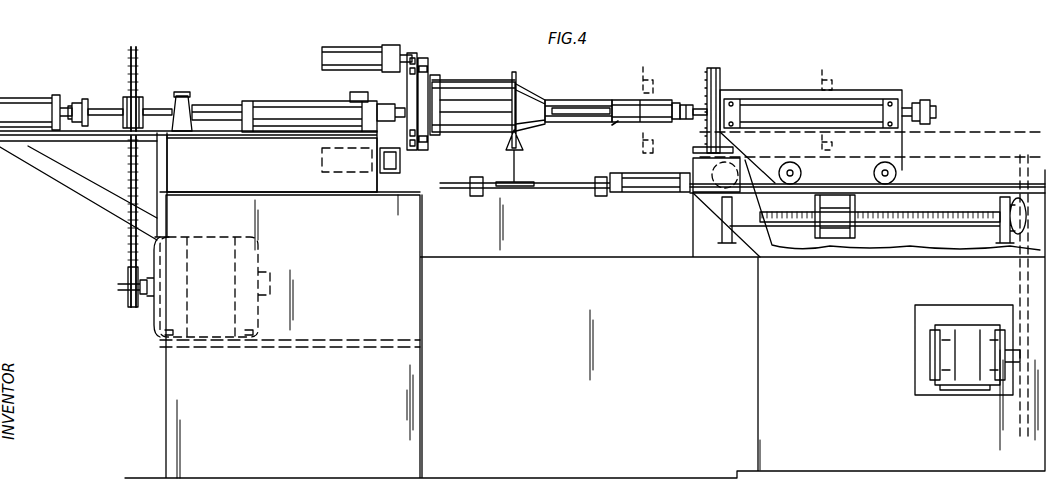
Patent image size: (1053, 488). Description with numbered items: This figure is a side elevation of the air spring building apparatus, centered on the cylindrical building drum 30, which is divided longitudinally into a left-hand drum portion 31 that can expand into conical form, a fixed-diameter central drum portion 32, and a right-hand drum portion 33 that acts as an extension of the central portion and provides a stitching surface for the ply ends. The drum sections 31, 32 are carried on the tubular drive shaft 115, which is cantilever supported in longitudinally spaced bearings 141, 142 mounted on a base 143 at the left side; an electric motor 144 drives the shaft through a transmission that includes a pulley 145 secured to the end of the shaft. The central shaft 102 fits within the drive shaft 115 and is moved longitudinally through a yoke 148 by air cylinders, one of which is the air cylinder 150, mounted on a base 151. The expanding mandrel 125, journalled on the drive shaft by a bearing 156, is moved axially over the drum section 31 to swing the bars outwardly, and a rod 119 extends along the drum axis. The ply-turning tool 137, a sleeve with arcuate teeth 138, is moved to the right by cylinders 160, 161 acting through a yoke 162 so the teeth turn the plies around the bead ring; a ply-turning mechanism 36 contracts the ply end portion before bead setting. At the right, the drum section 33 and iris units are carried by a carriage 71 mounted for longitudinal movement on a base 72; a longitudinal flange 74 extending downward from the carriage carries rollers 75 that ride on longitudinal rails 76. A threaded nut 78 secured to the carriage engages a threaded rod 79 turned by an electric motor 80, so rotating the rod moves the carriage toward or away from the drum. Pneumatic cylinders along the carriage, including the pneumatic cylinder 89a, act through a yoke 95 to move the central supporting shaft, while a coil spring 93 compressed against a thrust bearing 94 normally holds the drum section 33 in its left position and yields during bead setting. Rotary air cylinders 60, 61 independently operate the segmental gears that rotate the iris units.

The cylindrical building drum 30 is at (616, 122).
The left-hand drum portion 31 is at (560, 98).
The central drum portion 32 is at (635, 98).
The right-hand drum portion 33 is at (676, 101).
The ply-turning mechanism 36 is at (720, 72).
The rotary air cylinder 60 is at (692, 156).
The rotary air cylinder 61 is at (740, 148).
The carriage 71 is at (860, 204).
The base 72 is at (770, 308).
The longitudinal flange 74 is at (905, 142).
The rollers 75 is at (802, 172).
The longitudinal rails 76 is at (897, 172).
The threaded nut 78 is at (840, 238).
The threaded rod 79 is at (900, 226).
The electric motor 80 is at (965, 325).
The pneumatic cylinder 89a is at (805, 78).
The coil spring 93 is at (692, 92).
The thrust bearing 94 is at (695, 117).
The yoke 95 is at (920, 100).
The central shaft 102 is at (104, 108).
The tubular drive shaft 115 is at (222, 100).
The rod 119 is at (578, 106).
The expanding mandrel 125 is at (530, 95).
The ply-turning tool 137 is at (440, 140).
The arcuate teeth 138 is at (488, 88).
The bearing 141 is at (183, 90).
The bearing 142 is at (350, 92).
The base 143 is at (300, 188).
The electric motor 144 is at (262, 250).
The pulley 145 is at (139, 60).
The yoke 148 is at (84, 126).
The air cylinder 150 is at (44, 100).
The base 151 is at (40, 176).
The bearing 156 is at (378, 145).
The cylinder 160 is at (370, 30).
The cylinder 161 is at (320, 150).
The yoke 162 is at (418, 55).